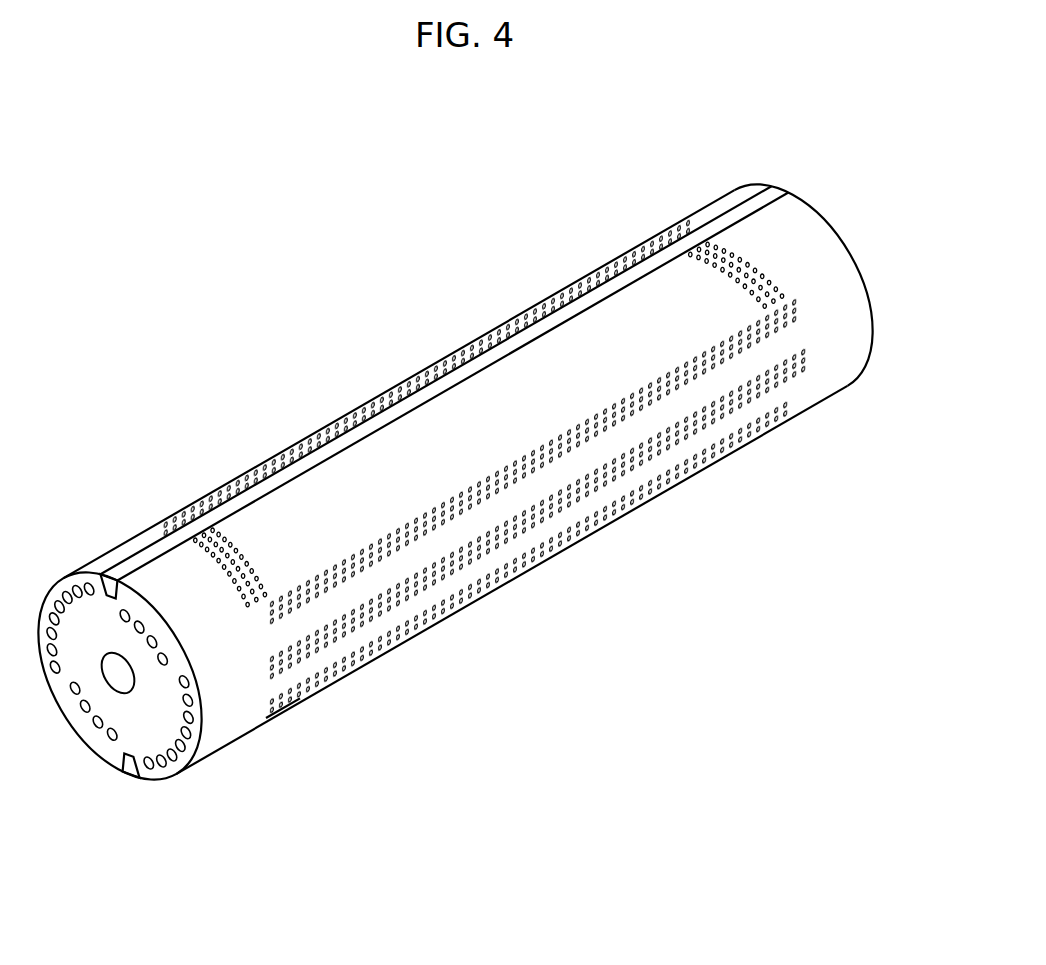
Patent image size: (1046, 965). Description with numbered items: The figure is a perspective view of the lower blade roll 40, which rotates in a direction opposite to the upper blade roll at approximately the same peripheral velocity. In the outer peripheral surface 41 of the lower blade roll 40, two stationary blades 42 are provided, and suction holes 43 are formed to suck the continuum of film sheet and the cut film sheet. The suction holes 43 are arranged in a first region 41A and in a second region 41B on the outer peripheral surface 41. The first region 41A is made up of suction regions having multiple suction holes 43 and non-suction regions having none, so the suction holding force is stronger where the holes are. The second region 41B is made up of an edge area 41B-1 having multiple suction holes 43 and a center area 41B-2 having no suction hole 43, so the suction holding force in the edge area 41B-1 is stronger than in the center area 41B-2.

The lower blade roll 40 is at (262, 322).
The outer peripheral surface 41 is at (812, 237).
The first region 41A is at (702, 468).
The second region 41B is at (242, 638).
The edge area 41B-1 is at (557, 472).
The center area 41B-2 is at (628, 364).
The stationary blade 42 is at (781, 188).
The suction hole 43 is at (432, 626).